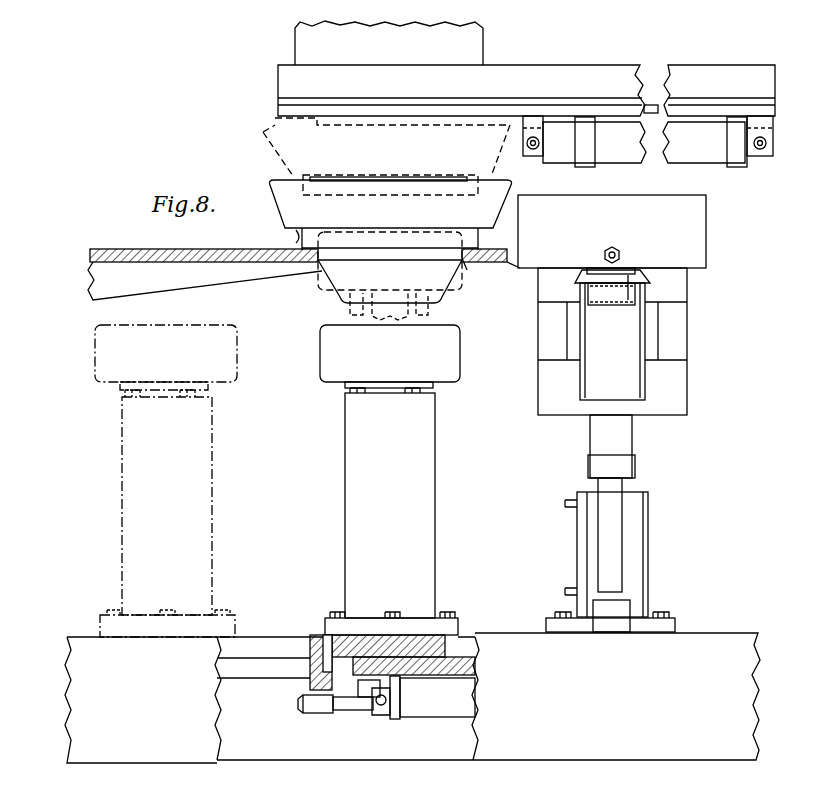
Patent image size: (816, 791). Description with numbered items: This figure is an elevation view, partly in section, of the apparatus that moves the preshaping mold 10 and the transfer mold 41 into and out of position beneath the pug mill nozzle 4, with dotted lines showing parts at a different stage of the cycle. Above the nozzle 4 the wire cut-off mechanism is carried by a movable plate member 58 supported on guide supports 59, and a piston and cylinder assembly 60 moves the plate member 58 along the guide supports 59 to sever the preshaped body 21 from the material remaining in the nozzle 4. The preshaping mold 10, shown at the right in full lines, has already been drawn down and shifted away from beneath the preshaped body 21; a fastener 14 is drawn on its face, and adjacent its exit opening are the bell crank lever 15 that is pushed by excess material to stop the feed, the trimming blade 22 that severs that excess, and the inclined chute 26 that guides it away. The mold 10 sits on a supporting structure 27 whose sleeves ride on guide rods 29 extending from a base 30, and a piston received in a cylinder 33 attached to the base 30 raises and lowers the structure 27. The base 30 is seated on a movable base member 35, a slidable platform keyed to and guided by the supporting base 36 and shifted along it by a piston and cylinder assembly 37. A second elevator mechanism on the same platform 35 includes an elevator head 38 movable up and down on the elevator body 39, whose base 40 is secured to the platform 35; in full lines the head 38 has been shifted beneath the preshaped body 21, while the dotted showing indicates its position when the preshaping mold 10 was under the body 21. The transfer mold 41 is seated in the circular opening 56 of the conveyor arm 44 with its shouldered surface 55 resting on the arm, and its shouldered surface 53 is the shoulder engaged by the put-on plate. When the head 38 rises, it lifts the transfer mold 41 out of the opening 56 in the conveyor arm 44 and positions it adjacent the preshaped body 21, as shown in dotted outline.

The pug mill nozzle 4 is at (478, 52).
The guide supports 59 is at (590, 102).
The movable plate member 58 is at (652, 104).
The piston and cylinder assembly 60 is at (571, 165).
The preshaped body 21 is at (313, 122).
The transfer mold 41 is at (268, 146).
The shouldered surface 53 is at (296, 240).
The conveyor arm 44 is at (494, 262).
The circular opening 56 is at (318, 272).
The shouldered surface 55 is at (467, 264).
The preshaping mold 10 is at (700, 213).
The nut 14 is at (603, 254).
The preshaping mold supporting structure 27 is at (685, 326).
The inclined chute 26 is at (590, 387).
The bell crank lever 15 is at (602, 294).
The blade 22 is at (630, 276).
The guide rods 29 is at (596, 434).
The cylinder 33 is at (581, 528).
The base 30 is at (676, 622).
The supporting base 36 is at (516, 645).
The base 40 is at (327, 625).
The movable base member 35 is at (470, 637).
The piston and cylinder assembly 37 is at (453, 726).
The elevator head 38 is at (461, 346).
The elevator body 39 is at (432, 452).